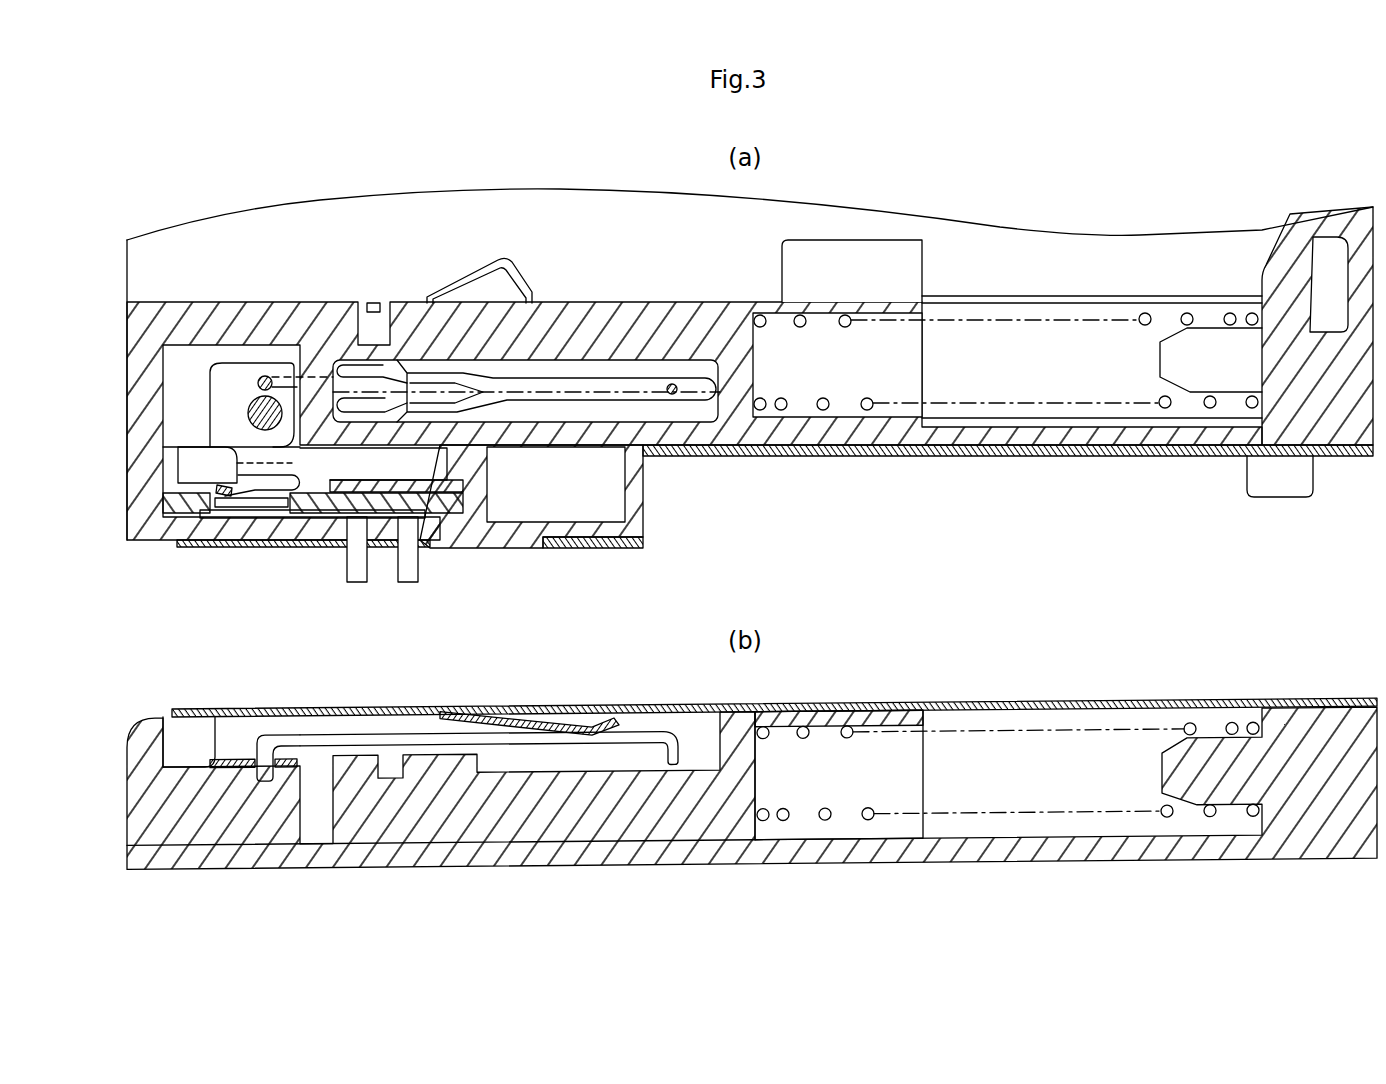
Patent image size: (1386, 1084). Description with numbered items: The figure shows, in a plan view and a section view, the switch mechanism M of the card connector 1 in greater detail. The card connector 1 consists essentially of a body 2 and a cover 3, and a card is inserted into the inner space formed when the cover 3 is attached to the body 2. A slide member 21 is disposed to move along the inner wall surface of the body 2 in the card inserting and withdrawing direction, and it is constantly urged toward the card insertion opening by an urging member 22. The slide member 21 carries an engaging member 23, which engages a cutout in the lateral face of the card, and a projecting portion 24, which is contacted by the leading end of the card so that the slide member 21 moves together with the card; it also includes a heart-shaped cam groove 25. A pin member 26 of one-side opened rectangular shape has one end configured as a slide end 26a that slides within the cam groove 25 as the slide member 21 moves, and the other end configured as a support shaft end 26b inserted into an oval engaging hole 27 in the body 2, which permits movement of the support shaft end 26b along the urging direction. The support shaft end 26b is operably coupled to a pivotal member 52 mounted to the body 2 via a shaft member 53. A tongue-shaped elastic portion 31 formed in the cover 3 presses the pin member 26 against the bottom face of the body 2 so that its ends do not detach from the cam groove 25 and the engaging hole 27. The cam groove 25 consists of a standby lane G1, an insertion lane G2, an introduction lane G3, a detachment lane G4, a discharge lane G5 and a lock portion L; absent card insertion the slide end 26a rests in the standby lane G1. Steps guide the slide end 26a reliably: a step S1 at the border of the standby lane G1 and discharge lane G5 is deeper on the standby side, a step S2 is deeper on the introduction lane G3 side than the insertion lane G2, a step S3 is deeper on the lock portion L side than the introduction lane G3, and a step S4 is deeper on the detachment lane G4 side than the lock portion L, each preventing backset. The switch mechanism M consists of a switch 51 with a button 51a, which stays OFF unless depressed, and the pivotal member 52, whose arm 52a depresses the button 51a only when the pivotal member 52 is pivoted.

The card connector 1 is at (203, 183).
The body 2 is at (1327, 222).
The cover 3 is at (815, 460).
The slide member 21 is at (622, 300).
The urging member 22 is at (1143, 312).
The engaging member 23 is at (470, 293).
The projecting portion 24 is at (875, 250).
The cam groove 25 is at (426, 352).
The pin member 26 is at (535, 380).
The slide end 26a is at (673, 384).
The support shaft end 26b is at (265, 375).
The engaging hole 27 is at (258, 380).
The tongue-shaped elastic portion 31 is at (545, 717).
The switch 51 is at (315, 515).
The button 51a is at (268, 514).
The pivotal member 52 is at (215, 398).
The arm 52a is at (232, 494).
The shaft member 53 is at (252, 422).
The switch mechanism M is at (212, 355).
The standby lane G1 is at (690, 398).
The insertion lane G2 is at (458, 372).
The introduction lane G3 is at (340, 370).
The detachment lane G4 is at (362, 412).
The discharge lane G5 is at (480, 418).
The step S1 is at (485, 385).
The step S2 is at (393, 373).
The step S3 is at (380, 368).
The step S4 is at (386, 400).
The lock portion L is at (470, 412).